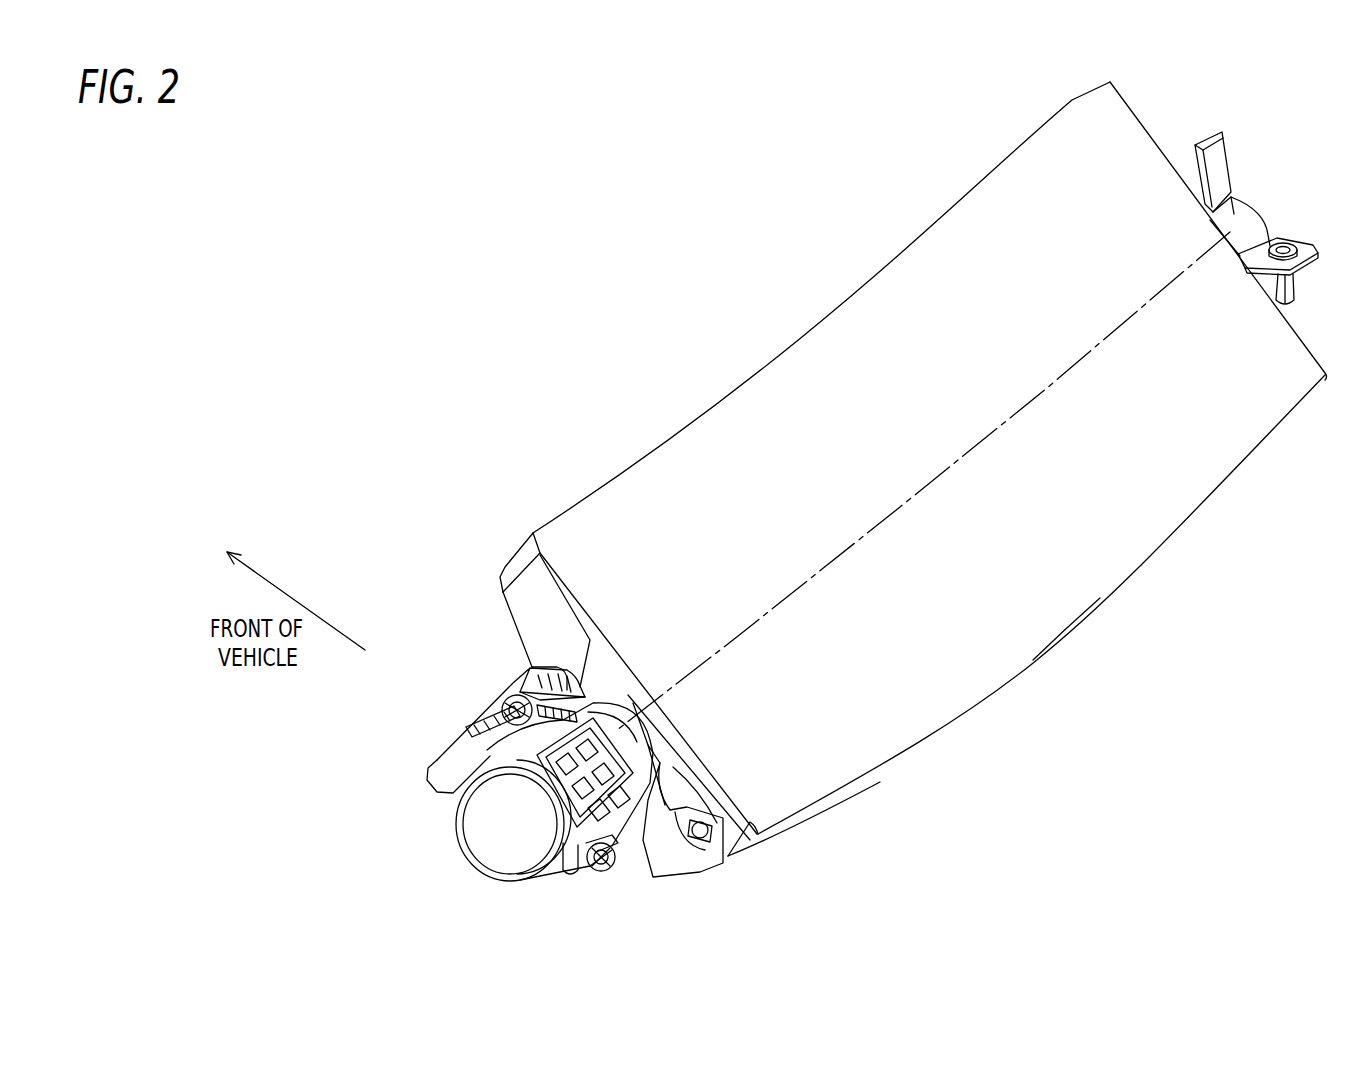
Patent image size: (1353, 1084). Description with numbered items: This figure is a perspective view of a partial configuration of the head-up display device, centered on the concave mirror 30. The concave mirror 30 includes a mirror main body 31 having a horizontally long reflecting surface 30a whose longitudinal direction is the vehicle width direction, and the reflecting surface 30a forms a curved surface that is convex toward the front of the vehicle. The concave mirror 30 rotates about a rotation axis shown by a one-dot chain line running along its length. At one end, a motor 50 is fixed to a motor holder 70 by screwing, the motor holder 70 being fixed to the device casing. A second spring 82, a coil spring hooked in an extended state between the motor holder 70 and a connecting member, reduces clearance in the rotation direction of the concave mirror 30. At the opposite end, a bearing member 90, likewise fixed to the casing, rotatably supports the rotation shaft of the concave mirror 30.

The concave mirror 30 is at (790, 270).
The reflecting surface 30a is at (1073, 550).
The mirror main body 31 is at (1033, 660).
The motor 50 is at (482, 820).
The motor holder 70 is at (490, 712).
The second spring 82 is at (663, 803).
The bearing member 90 is at (1243, 221).